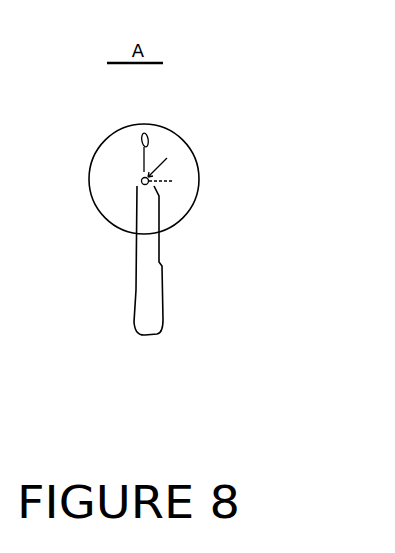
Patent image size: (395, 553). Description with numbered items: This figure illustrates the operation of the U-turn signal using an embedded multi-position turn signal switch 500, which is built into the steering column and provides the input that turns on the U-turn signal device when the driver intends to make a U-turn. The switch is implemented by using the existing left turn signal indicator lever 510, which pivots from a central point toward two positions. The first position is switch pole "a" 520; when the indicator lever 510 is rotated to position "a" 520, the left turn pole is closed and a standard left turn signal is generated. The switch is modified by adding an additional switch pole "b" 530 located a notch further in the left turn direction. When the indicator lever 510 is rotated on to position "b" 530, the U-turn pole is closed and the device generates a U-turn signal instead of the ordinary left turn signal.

The multi-position turn signal switch 500 is at (154, 230).
The indicator lever 510 is at (147, 327).
The switch pole "a" 520 is at (185, 150).
The switch pole "b" 530 is at (190, 182).